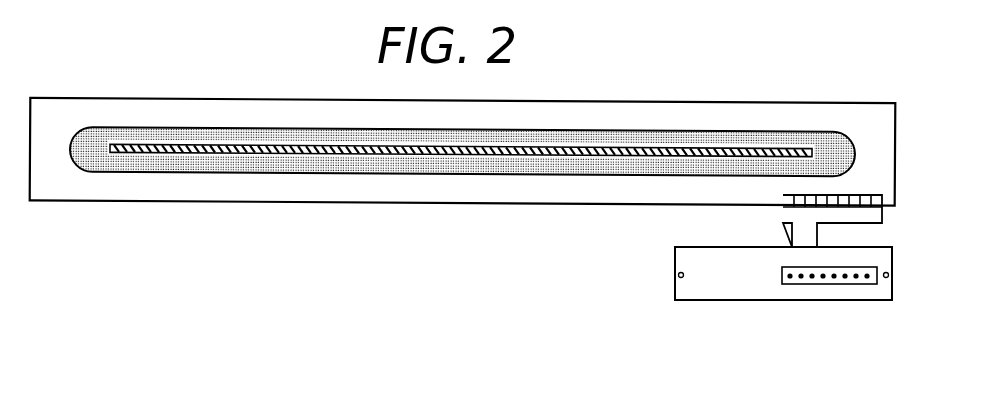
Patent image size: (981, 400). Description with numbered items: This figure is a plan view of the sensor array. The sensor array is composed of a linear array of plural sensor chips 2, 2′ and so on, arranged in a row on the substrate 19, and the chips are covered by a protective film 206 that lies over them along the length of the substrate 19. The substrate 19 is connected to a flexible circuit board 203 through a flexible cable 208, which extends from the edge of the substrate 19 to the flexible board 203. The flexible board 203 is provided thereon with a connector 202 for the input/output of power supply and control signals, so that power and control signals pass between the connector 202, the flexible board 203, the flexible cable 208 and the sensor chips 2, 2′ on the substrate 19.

The sensor chip 2 is at (138, 153).
The sensor chip 2′ is at (192, 150).
The substrate 19 is at (442, 203).
The protective film 206 is at (353, 173).
The flexible cable 208 is at (790, 213).
The flexible circuit board 203 is at (720, 292).
The connector 202 is at (820, 288).